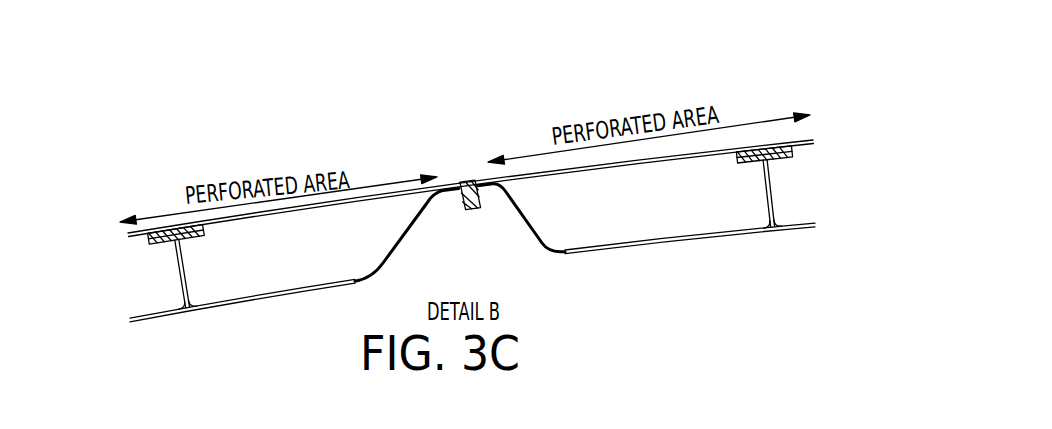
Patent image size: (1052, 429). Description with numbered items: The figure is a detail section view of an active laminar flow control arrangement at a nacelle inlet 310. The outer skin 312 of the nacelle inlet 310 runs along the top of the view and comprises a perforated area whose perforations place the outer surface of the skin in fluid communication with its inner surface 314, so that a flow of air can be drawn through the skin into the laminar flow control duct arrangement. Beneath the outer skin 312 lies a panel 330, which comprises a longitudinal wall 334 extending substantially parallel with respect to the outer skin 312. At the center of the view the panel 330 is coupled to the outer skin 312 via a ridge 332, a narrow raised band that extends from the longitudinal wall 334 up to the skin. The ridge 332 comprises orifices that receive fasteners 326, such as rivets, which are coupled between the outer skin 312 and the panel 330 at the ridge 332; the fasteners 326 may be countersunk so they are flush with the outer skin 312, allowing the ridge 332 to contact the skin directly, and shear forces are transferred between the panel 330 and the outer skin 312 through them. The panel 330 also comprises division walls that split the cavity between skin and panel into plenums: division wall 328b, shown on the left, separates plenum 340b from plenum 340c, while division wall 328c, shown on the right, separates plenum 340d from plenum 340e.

The nacelle inlet 310 is at (373, 195).
The outer skin 312 is at (485, 180).
The inner surface 314 is at (237, 221).
The fasteners 326 is at (462, 184).
The division wall 328b is at (178, 262).
The division wall 328c is at (766, 183).
The panel 330 is at (277, 294).
The ridge 332 is at (441, 197).
The longitudinal wall 334 is at (643, 243).
The plenum 340b is at (172, 304).
The plenum 340c is at (310, 260).
The plenum 340d is at (667, 213).
The plenum 340e is at (823, 203).